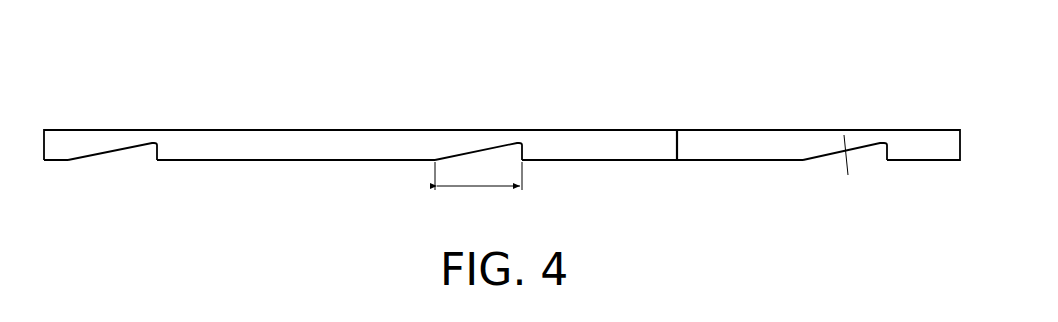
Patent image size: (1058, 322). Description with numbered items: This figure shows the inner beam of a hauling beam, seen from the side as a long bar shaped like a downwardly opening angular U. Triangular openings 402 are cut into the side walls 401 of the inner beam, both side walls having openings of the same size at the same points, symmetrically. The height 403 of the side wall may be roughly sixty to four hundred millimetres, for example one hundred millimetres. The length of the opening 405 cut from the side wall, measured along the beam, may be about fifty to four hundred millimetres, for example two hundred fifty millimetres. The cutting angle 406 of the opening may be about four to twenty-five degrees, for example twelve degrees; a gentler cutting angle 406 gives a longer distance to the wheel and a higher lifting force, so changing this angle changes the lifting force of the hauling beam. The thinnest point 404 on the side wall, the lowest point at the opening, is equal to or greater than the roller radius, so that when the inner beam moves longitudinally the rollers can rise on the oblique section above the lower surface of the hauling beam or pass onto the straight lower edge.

The side wall 401 is at (228, 139).
The triangular opening 402 is at (113, 159).
The height of the side wall 403 is at (679, 133).
The thinnest point on the side wall 404 is at (515, 137).
The length of the opening 405 is at (481, 187).
The cutting angle 406 is at (850, 153).